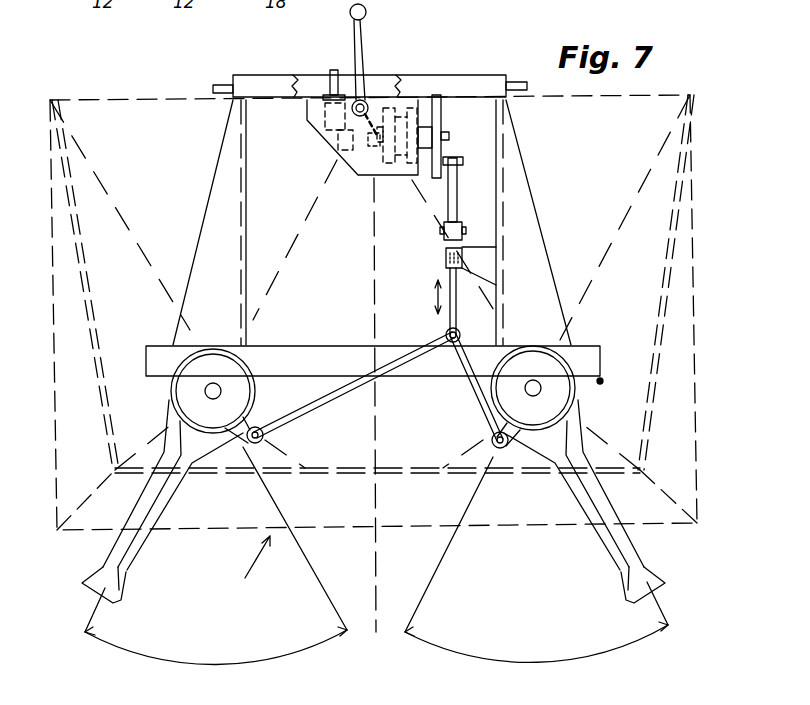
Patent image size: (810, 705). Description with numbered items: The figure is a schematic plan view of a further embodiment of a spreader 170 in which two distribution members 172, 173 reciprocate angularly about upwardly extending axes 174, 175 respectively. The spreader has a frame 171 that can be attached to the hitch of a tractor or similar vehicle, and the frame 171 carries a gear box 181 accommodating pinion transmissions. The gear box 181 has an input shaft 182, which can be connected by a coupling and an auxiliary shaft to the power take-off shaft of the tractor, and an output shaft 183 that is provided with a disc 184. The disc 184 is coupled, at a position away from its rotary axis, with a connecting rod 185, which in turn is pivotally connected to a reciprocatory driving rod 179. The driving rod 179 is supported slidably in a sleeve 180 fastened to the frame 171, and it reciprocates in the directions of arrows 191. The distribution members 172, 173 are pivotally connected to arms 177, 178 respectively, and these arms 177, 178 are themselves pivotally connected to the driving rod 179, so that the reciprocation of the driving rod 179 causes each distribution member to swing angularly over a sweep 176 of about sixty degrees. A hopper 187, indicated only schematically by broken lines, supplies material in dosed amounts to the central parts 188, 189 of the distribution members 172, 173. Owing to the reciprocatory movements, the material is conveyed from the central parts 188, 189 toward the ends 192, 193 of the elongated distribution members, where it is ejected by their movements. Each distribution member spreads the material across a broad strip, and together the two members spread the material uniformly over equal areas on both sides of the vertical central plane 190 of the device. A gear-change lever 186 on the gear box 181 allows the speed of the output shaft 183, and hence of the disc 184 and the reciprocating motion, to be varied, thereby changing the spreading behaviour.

The spreader 170 is at (236, 566).
The frame 171 is at (472, 63).
The distribution member 172 is at (138, 553).
The distribution member 173 is at (601, 538).
The axis 174 is at (215, 390).
The axis 175 is at (533, 386).
The angle 176 is at (211, 661).
The arm 177 is at (360, 405).
The arm 178 is at (476, 392).
The driving rod 179 is at (447, 328).
The sleeve 180 is at (446, 258).
The gear box 181 is at (331, 150).
The input shaft 182 is at (333, 69).
The output shaft 183 is at (446, 136).
The disc 184 is at (437, 94).
The connecting rod 185 is at (447, 200).
The gear-change lever 186 is at (363, 38).
The hopper 187 is at (128, 137).
The central part 188 is at (256, 393).
The central part 189 is at (600, 383).
The vertical central plane 190 is at (376, 566).
The arrows 191 is at (436, 300).
The end 192 is at (107, 596).
The end 193 is at (630, 583).